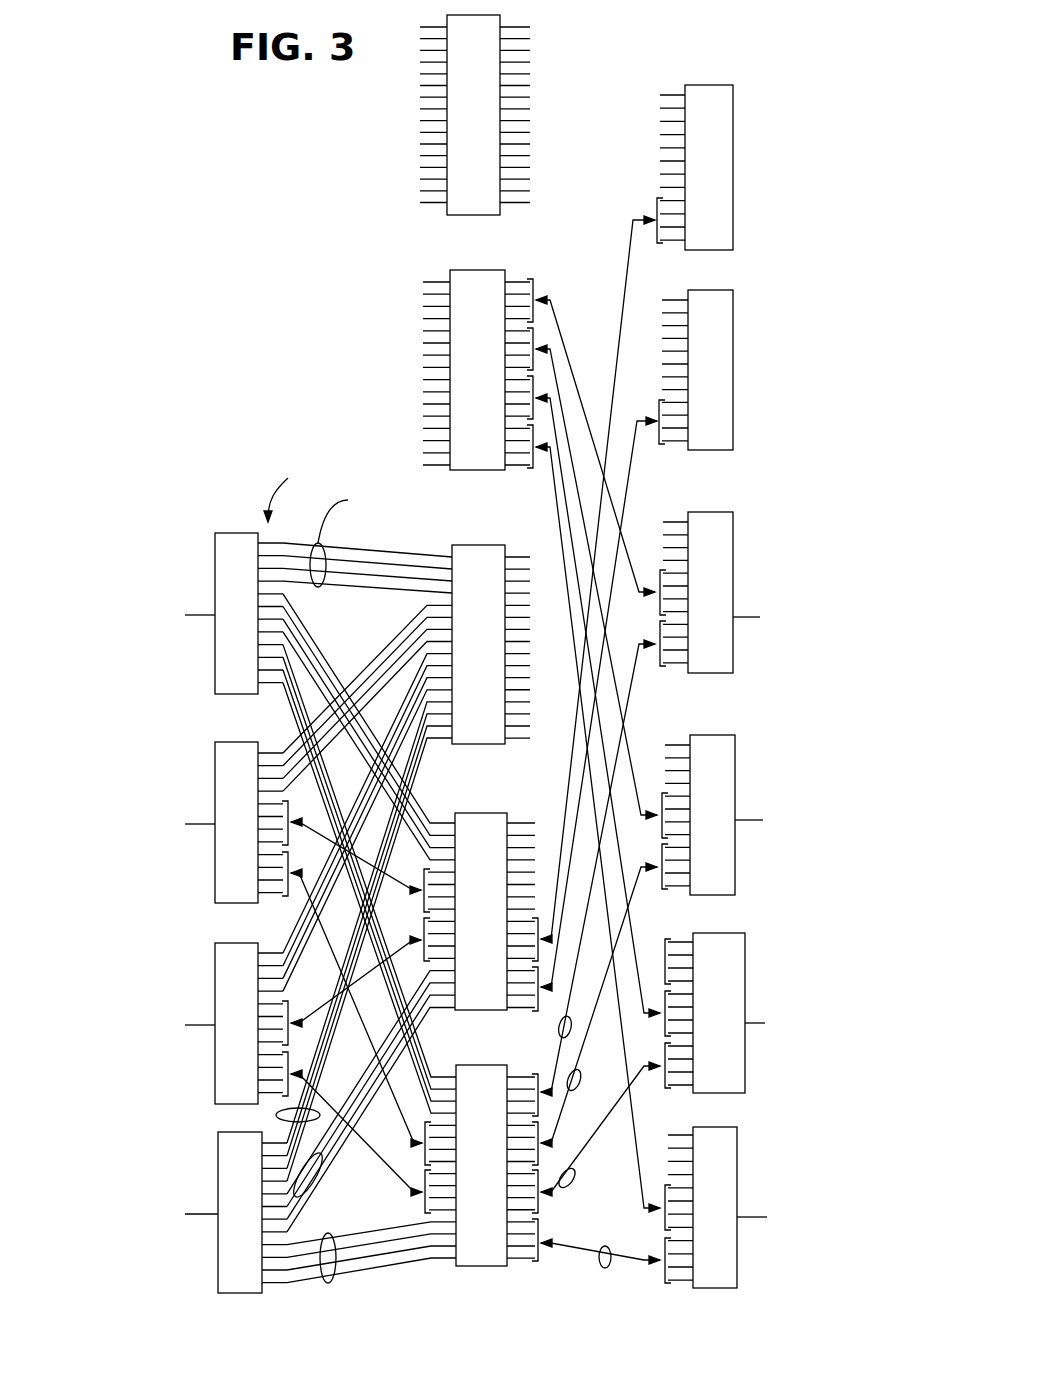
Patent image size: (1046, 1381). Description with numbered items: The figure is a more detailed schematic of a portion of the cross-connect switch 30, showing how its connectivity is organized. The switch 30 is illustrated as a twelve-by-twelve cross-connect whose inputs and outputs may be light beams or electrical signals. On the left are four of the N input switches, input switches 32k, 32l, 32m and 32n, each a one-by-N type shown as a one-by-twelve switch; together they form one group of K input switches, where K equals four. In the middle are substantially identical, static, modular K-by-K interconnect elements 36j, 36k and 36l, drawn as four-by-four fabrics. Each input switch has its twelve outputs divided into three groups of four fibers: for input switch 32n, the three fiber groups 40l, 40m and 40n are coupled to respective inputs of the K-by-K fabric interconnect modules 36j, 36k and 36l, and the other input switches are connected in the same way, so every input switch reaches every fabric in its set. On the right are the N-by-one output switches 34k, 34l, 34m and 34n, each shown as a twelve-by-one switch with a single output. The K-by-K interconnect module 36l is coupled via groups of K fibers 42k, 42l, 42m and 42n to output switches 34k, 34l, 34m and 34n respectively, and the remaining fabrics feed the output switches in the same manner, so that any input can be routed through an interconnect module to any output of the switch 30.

The cross-connect switch 30 is at (176, 1273).
The input switch 32k is at (220, 685).
The input switch 32l is at (220, 894).
The input switch 32m is at (220, 1095).
The input switch 32n is at (224, 1284).
The output switch 34k is at (694, 557).
The output switch 34l is at (697, 768).
The output switch 34m is at (700, 968).
The output switch 34n is at (699, 1168).
The K×K interconnect element 36j is at (463, 734).
The K×K interconnect element 36k is at (463, 946).
The K×K interconnect element 36l is at (465, 1198).
The group of K fibers 40l is at (276, 1115).
The group of K fibers 40m is at (315, 1197).
The group of K fibers 40n is at (328, 1284).
The group of K fibers 42k is at (558, 1028).
The group of K fibers 42l is at (578, 1091).
The group of K fibers 42m is at (574, 1181).
The group of K fibers 42n is at (608, 1268).